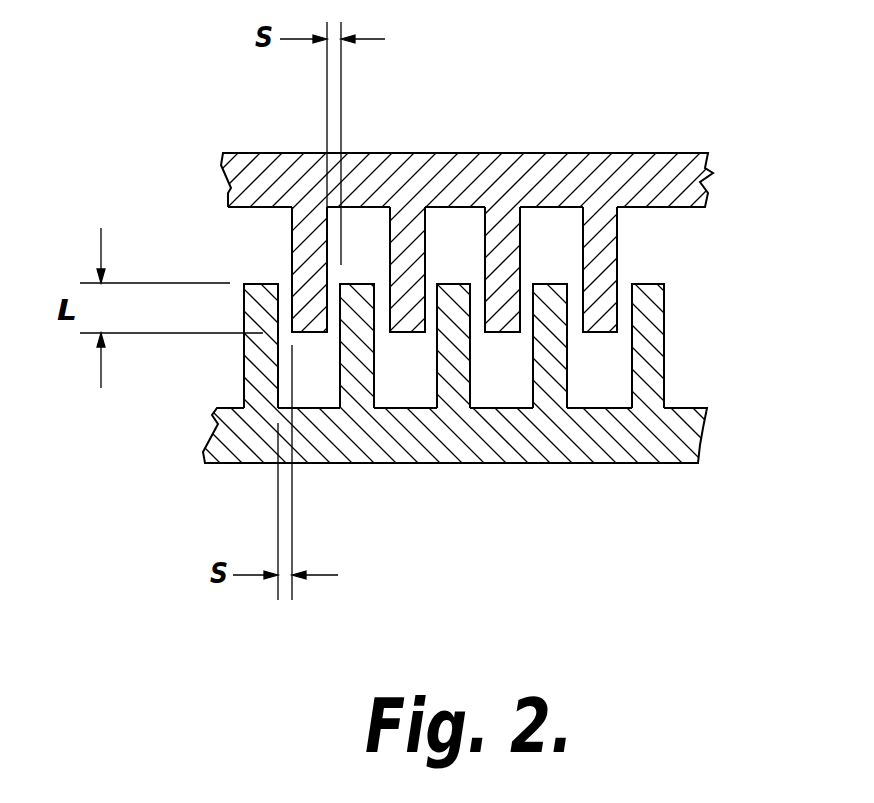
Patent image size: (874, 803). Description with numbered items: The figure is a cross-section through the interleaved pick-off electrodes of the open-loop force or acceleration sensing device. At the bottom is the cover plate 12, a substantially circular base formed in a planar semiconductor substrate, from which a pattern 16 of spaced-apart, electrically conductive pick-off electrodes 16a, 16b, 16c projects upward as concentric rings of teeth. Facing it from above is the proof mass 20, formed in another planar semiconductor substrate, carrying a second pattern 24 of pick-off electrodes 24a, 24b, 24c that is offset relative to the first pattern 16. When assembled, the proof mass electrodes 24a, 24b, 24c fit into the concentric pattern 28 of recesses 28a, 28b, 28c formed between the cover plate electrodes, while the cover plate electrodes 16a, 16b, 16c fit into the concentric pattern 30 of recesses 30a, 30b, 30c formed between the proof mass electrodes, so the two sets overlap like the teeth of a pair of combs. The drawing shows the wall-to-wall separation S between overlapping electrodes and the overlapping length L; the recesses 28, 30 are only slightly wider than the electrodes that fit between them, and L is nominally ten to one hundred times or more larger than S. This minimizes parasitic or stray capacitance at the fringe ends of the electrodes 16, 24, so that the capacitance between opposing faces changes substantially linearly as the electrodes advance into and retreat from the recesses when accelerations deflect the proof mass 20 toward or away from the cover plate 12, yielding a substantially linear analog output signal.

The cover plate 12 is at (702, 428).
The pattern of pick-off electrodes 16 is at (466, 428).
The pick-off electrode 16a is at (244, 363).
The pick-off electrode 16b is at (374, 380).
The pick-off electrode 16c is at (470, 380).
The proof mass 20 is at (705, 170).
The second pattern of pick-off electrodes 24 is at (499, 189).
The pick-off electrode 24a is at (292, 240).
The pick-off electrode 24b is at (427, 225).
The pick-off electrode 24c is at (522, 237).
The concentric pattern of recesses 28 is at (508, 408).
The recess 28a is at (318, 383).
The recess 28b is at (413, 383).
The recess 28c is at (510, 383).
The concentric pattern of recesses 30 is at (527, 208).
The recess 30a is at (363, 230).
The recess 30b is at (470, 230).
The recess 30c is at (567, 230).